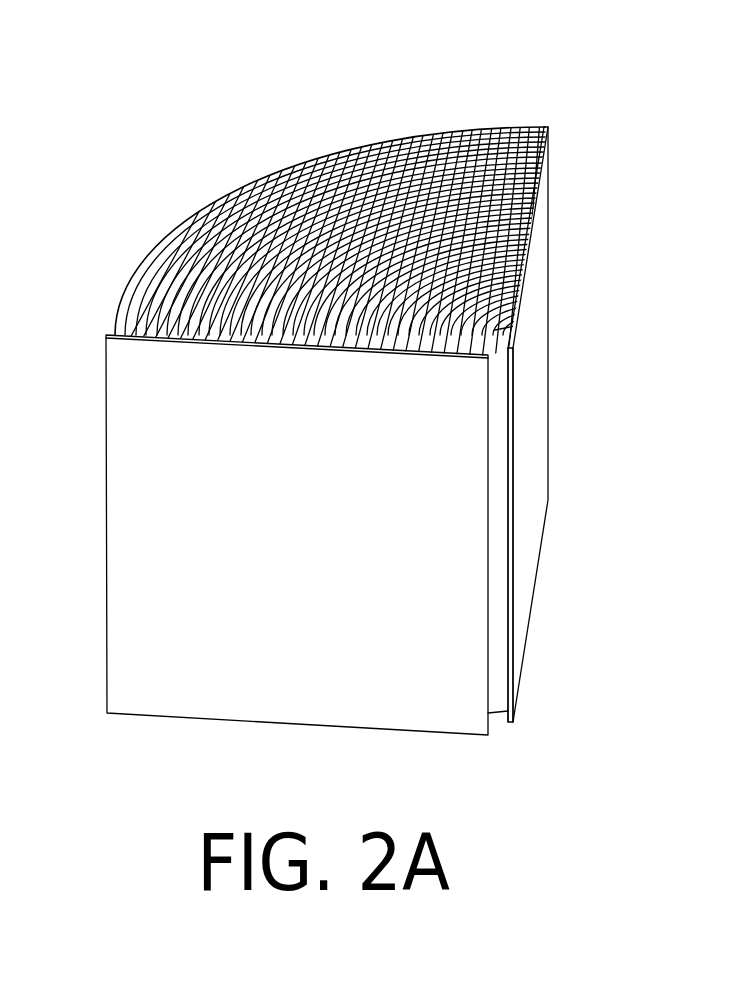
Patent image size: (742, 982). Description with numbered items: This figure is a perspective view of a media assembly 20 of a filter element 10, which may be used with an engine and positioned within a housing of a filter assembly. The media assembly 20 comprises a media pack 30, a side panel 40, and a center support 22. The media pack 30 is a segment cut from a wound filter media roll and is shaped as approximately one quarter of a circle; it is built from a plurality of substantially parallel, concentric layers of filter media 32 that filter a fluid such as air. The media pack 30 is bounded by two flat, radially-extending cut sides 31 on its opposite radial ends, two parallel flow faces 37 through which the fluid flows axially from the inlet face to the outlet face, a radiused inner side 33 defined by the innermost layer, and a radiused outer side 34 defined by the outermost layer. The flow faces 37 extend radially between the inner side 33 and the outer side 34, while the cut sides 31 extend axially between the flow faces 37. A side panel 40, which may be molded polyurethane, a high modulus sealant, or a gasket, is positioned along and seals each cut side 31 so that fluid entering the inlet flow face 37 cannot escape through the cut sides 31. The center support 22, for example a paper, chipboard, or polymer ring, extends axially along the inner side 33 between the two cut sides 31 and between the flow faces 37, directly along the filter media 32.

The filter element 10 is at (185, 152).
The media assembly 20 is at (346, 430).
The center support 22 is at (508, 348).
The media pack 30 is at (346, 219).
The cut sides 31 is at (530, 215).
The filter media 32 is at (512, 252).
The inner side 33 is at (510, 327).
The outer side 34 is at (179, 240).
The flow faces 37 is at (365, 219).
The side panel 40 is at (520, 297).